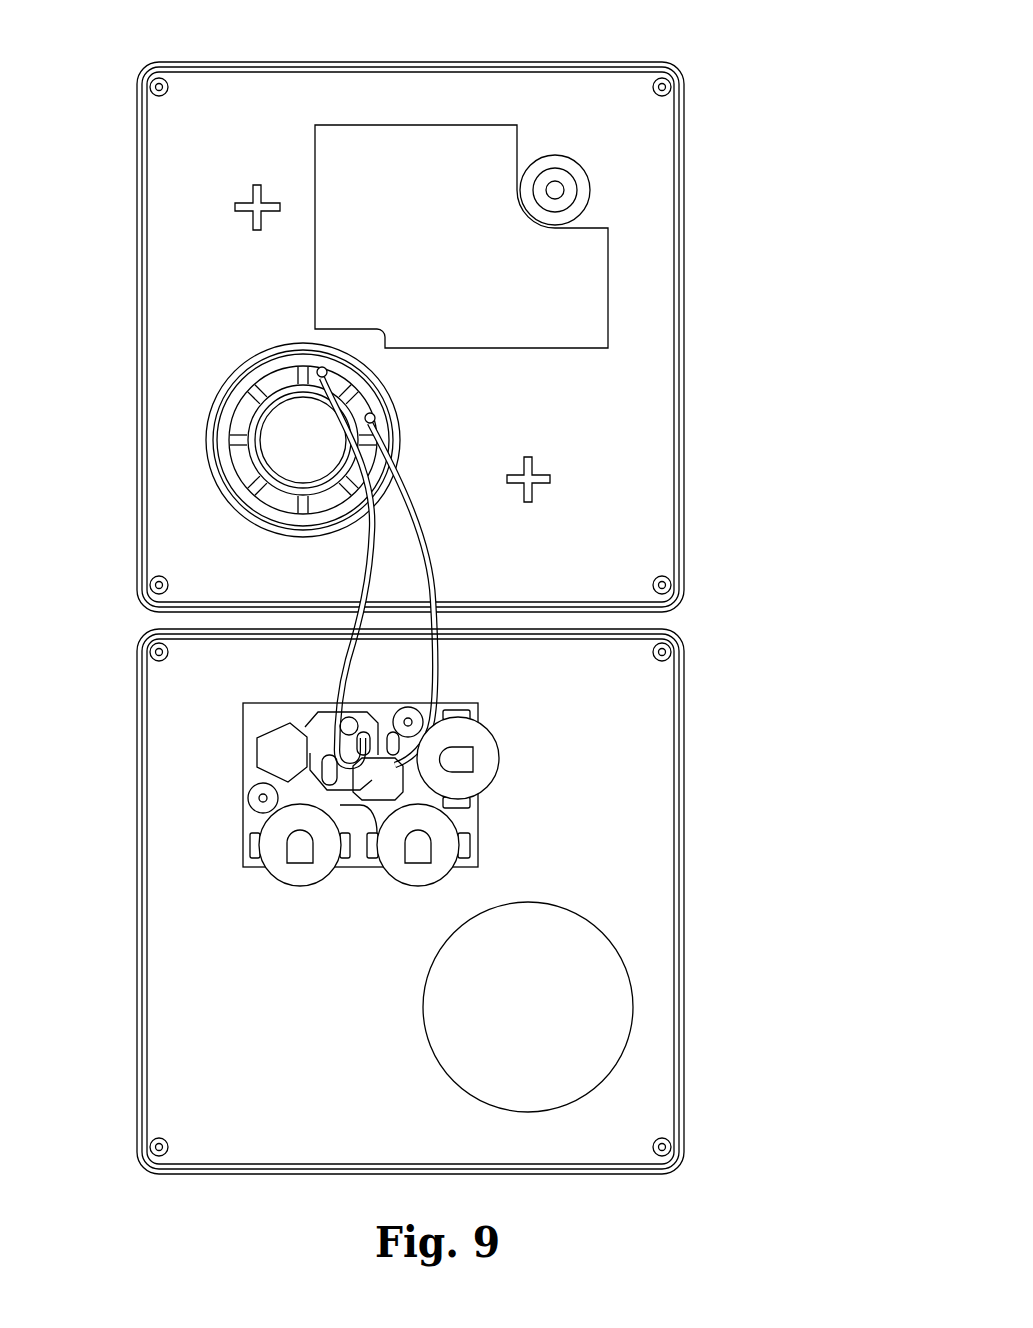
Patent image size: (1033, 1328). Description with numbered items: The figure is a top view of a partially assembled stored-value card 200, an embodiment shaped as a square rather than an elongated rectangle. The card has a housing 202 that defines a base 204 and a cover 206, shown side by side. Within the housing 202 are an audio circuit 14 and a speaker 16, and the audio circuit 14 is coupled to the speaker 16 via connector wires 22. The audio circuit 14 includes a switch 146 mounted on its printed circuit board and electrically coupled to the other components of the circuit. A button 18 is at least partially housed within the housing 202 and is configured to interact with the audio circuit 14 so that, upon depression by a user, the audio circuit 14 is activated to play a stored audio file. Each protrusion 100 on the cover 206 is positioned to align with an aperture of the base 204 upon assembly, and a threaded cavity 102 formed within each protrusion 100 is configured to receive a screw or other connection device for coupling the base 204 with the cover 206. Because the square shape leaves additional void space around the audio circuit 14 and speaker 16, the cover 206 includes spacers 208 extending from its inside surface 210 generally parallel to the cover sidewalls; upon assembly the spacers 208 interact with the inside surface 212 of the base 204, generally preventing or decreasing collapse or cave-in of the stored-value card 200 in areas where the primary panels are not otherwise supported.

The stored-value card 200 is at (691, 46).
The protrusion 100 is at (676, 88).
The threaded cavity 102 is at (662, 93).
The button 18 is at (580, 202).
The spacers 208 is at (235, 208).
The speaker 16 is at (214, 441).
The cover 206 is at (632, 430).
The inside surface 210 is at (633, 546).
The connector wires 22 is at (425, 572).
The housing 202 is at (692, 610).
The base 204 is at (627, 740).
The inside surface 212 is at (630, 866).
The audio circuit 14 is at (236, 780).
The switch 146 is at (268, 750).